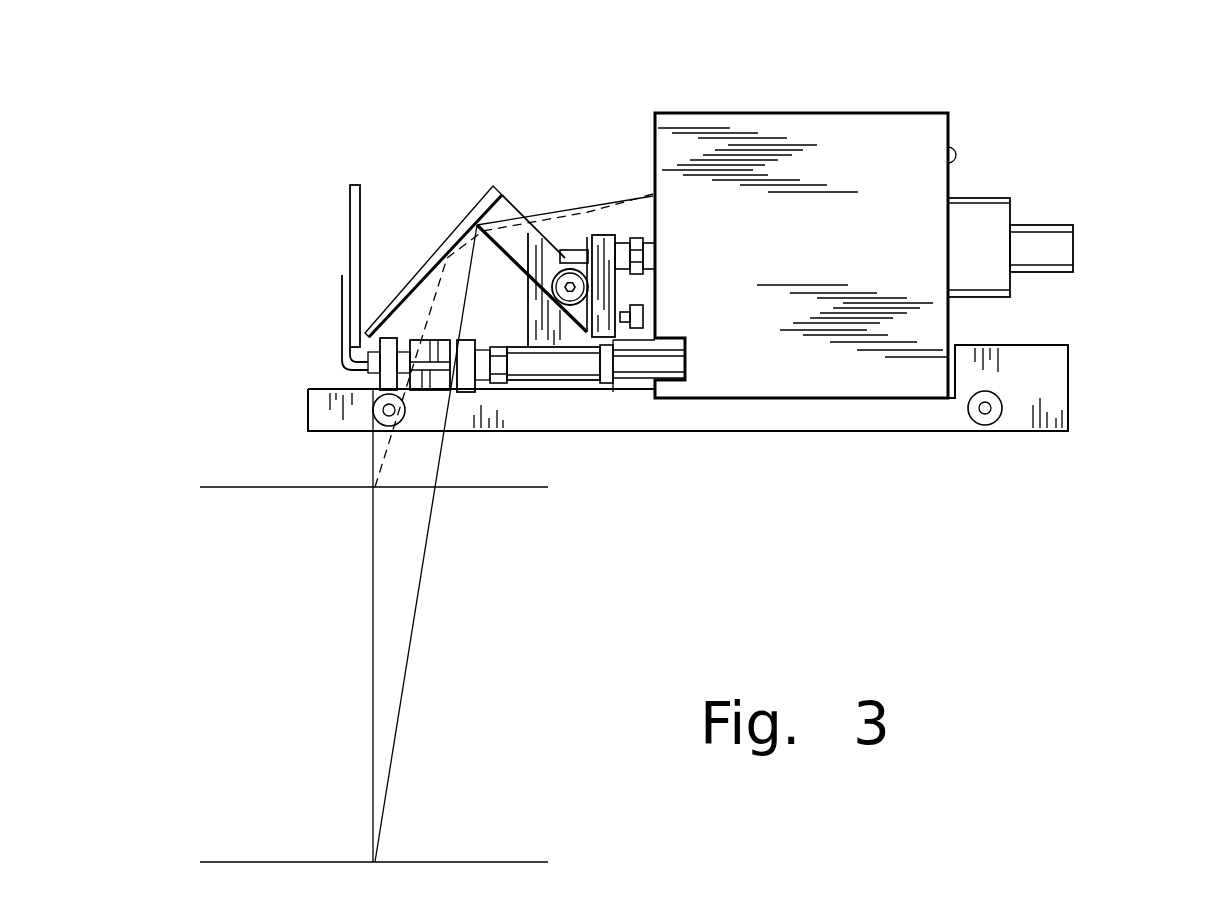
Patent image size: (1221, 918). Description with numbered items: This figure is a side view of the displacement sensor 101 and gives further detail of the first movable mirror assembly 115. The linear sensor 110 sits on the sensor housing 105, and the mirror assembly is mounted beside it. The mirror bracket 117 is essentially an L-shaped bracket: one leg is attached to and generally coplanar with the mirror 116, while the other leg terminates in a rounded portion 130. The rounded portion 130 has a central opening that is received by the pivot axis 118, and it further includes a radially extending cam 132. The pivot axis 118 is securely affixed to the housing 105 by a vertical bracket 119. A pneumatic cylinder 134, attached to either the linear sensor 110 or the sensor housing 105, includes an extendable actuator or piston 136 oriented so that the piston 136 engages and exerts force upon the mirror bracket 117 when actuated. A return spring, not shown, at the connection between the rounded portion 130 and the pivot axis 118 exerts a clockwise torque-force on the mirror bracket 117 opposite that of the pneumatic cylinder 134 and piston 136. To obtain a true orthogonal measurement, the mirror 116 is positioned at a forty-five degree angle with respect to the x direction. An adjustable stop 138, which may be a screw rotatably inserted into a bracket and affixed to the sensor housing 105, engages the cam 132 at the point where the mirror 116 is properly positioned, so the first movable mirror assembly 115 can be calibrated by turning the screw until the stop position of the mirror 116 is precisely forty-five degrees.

The displacement sensor 101 is at (706, 457).
The sensor housing 105 is at (906, 432).
The linear sensor 110 is at (954, 186).
The first movable mirror assembly 115 is at (438, 223).
The mirror 116 is at (380, 310).
The mirror bracket 117 is at (497, 186).
The pivot axis 118 is at (565, 257).
The vertical bracket 119 is at (582, 343).
The rounded portion 130 is at (552, 310).
The cam 132 is at (577, 335).
The pneumatic cylinder 134 is at (645, 245).
The piston 136 is at (583, 250).
The adjustable stop 138 is at (640, 316).